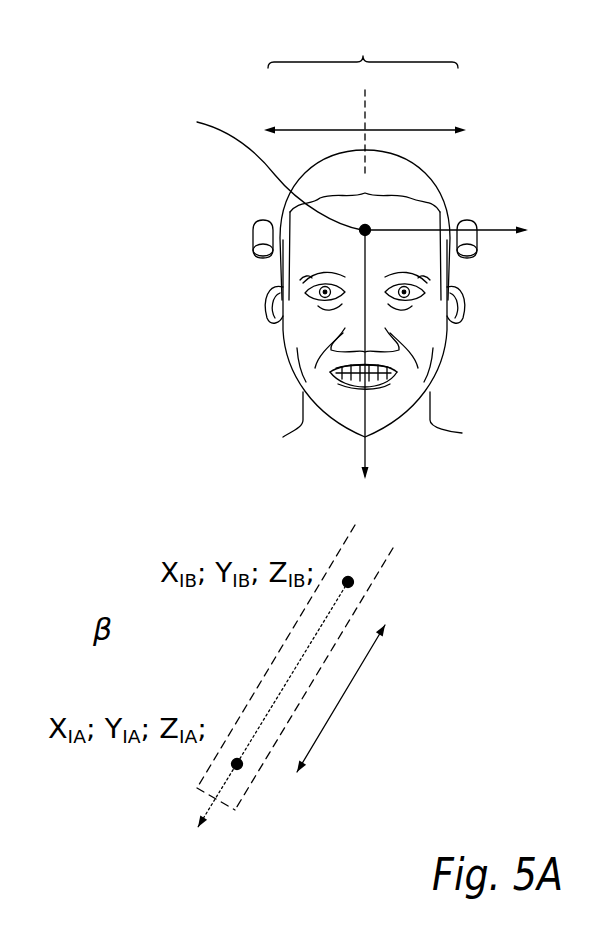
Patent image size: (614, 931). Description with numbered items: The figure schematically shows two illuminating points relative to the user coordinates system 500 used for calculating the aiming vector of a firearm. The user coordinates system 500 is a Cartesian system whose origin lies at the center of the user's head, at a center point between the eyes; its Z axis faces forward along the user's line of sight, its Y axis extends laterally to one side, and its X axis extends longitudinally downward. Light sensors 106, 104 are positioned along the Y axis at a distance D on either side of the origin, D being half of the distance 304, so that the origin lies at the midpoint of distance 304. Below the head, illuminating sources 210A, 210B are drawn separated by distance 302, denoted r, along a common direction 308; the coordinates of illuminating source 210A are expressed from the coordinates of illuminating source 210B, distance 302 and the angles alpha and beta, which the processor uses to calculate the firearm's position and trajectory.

The user coordinates system 500 is at (498, 112).
The distance between light sensors 304 is at (364, 100).
The light sensor 106 is at (252, 226).
The light sensor 104 is at (478, 250).
The illuminating source 210A is at (243, 763).
The illuminating source 210B is at (354, 581).
The distance between illumination sources 302 is at (361, 698).
The microphone array axis direction 308 is at (282, 693).